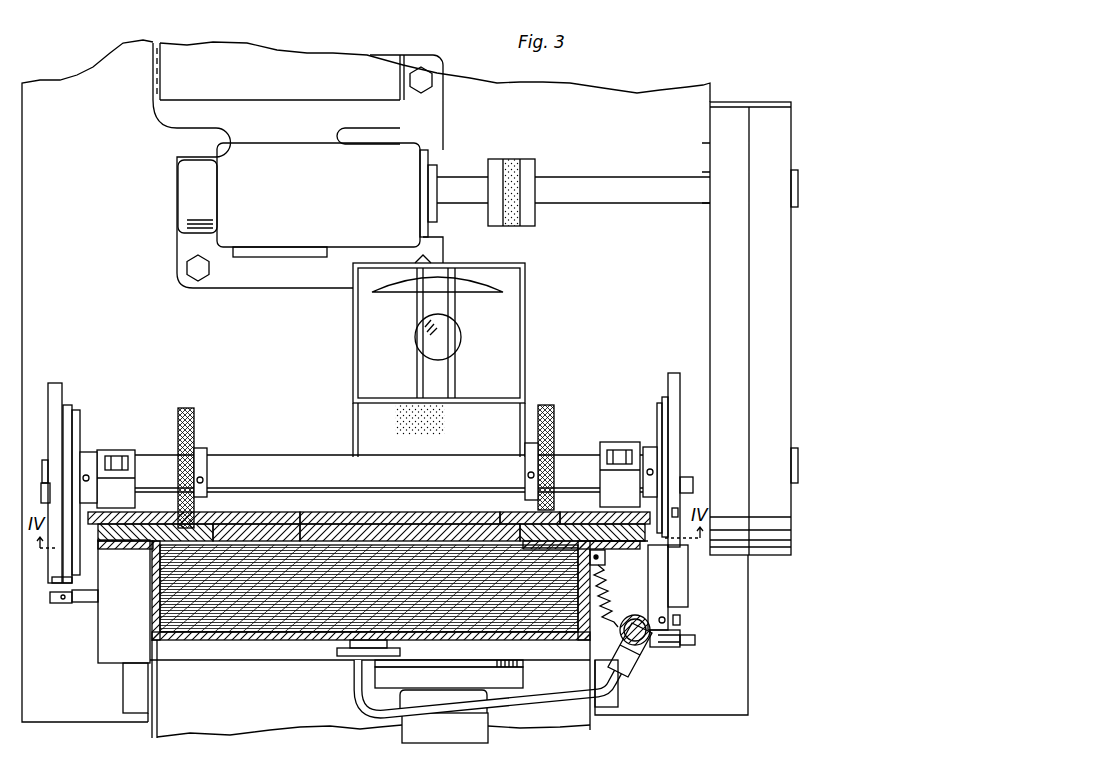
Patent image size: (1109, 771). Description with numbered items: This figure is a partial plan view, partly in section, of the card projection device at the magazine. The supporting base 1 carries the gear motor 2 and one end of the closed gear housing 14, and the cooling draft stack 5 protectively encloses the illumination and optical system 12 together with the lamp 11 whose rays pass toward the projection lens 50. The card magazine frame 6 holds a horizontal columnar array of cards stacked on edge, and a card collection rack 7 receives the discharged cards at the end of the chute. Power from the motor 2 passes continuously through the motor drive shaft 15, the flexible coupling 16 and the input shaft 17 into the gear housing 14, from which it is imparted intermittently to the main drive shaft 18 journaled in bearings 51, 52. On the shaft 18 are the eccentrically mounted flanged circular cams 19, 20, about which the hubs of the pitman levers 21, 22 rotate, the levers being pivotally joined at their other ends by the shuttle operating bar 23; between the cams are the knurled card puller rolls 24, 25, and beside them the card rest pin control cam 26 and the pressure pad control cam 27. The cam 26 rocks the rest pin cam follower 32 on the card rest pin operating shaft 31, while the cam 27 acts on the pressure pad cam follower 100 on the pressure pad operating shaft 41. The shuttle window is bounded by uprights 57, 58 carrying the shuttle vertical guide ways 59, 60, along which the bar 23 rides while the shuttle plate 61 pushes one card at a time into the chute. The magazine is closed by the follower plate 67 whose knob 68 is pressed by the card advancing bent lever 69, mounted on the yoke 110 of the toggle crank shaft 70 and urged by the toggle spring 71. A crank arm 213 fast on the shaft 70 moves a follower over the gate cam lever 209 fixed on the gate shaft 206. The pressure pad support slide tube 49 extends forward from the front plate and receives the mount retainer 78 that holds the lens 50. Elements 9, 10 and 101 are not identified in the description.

The supporting base 1 is at (78, 77).
The gear motor 2 is at (200, 128).
The cooling draft stack 5 is at (353, 347).
The card magazine frame 6 is at (148, 610).
The card collection rack 7 is at (165, 730).
The shim 9 is at (100, 546).
The pivot pin 10 is at (605, 558).
The lamp 11 is at (455, 337).
The illumination and optical system 12 is at (487, 289).
The gear housing 14 is at (710, 146).
The motor drive shaft 15 is at (454, 183).
The flexible coupling 16 is at (535, 168).
The input shaft 17 is at (622, 182).
The main drive shaft 18 is at (248, 468).
The eccentrically mounted flanged circular cam 19 is at (80, 422).
The eccentrically mounted flanged circular cam 20 is at (658, 410).
The pitman lever 21 is at (70, 408).
The pitman lever 22 is at (664, 400).
The shuttle operating bar 23 is at (300, 515).
The card puller roll 24 is at (195, 422).
The card puller roll 25 is at (555, 414).
The card rest pin control cam 26 is at (60, 396).
The pressure pad control cam 27 is at (675, 380).
The card rest pin operating shaft 31 is at (92, 605).
The rest pin cam follower 32 is at (58, 586).
The pressure pad operating shaft 41 is at (680, 620).
The pressure pad support slide tube 49 is at (523, 664).
The projection lens 50 is at (488, 735).
The bearing 51 is at (113, 452).
The bearing 52 is at (606, 445).
The upright 57 is at (158, 520).
The upright 58 is at (590, 522).
The shuttle vertical guide way 59 is at (220, 530).
The shuttle vertical guide way 60 is at (513, 520).
The shuttle plate 61 is at (396, 530).
The magazine follower plate 67 is at (320, 640).
The knob 68 is at (400, 652).
The card advancing bent lever 69 is at (372, 697).
The toggle crank shaft 70 is at (633, 617).
The toggle spring 71 is at (605, 583).
The mount retainer 78 is at (523, 681).
The pressure pad cam follower 100 is at (683, 583).
The filter mass 101 is at (262, 643).
The yoke 110 is at (640, 672).
The gate shaft 206 is at (697, 638).
The gate cam lever 209 is at (648, 652).
The crank arm 213 is at (666, 646).